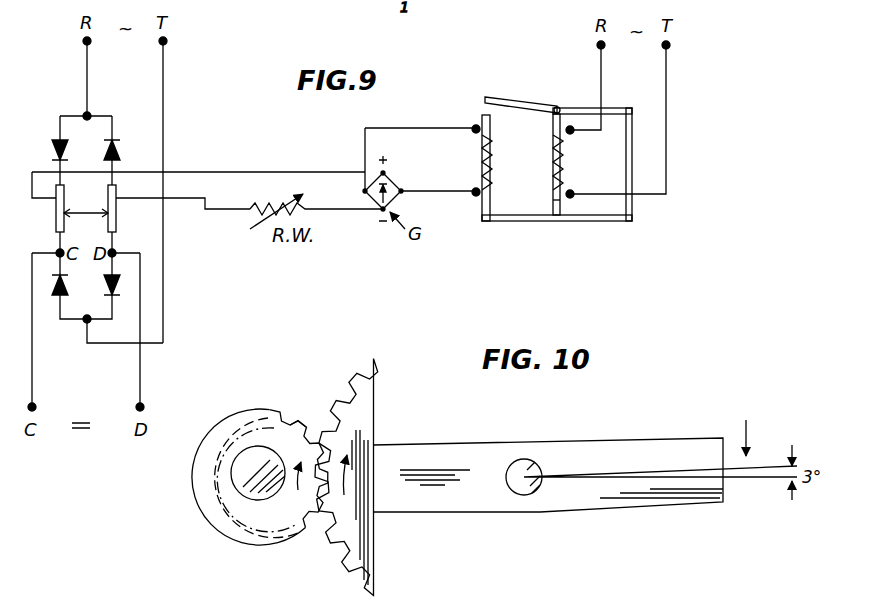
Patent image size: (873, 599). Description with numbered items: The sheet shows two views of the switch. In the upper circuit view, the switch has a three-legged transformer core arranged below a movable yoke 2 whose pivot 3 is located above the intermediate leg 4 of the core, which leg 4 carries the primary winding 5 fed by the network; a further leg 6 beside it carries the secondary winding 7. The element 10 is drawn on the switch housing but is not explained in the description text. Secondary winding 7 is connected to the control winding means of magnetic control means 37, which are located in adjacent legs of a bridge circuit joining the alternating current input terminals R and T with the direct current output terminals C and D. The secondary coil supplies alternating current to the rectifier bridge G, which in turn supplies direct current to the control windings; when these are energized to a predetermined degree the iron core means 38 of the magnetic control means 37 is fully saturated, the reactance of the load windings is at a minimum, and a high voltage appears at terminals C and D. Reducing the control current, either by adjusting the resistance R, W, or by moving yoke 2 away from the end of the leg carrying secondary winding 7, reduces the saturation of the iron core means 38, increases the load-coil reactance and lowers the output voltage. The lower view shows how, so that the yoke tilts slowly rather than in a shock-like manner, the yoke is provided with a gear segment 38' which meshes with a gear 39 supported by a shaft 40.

In FIG. 9, the yoke 2 is at (523, 104).
In FIG. 10, the yoke 2 is at (435, 452).
In FIG. 9, the pivot 3 is at (559, 106).
In FIG. 10, the pivot 3 is at (514, 468).
In FIG. 9, the intermediate leg 4 is at (553, 200).
In FIG. 9, the primary winding 5 is at (564, 152).
In FIG. 9, the leg 6 is at (482, 118).
In FIG. 9, the secondary winding 7 is at (486, 192).
In FIG. 9, the housing 10 is at (628, 158).
In FIG. 9, the magnetic control means 37 is at (117, 215).
In FIG. 9, the iron core means 38 is at (63, 202).
In FIG. 10, the gear segment 38' is at (365, 477).
In FIG. 10, the gear 39 is at (297, 432).
In FIG. 10, the shaft 40 is at (245, 477).